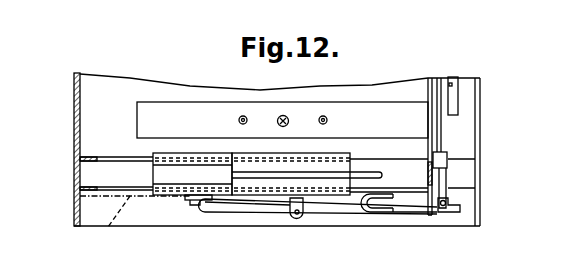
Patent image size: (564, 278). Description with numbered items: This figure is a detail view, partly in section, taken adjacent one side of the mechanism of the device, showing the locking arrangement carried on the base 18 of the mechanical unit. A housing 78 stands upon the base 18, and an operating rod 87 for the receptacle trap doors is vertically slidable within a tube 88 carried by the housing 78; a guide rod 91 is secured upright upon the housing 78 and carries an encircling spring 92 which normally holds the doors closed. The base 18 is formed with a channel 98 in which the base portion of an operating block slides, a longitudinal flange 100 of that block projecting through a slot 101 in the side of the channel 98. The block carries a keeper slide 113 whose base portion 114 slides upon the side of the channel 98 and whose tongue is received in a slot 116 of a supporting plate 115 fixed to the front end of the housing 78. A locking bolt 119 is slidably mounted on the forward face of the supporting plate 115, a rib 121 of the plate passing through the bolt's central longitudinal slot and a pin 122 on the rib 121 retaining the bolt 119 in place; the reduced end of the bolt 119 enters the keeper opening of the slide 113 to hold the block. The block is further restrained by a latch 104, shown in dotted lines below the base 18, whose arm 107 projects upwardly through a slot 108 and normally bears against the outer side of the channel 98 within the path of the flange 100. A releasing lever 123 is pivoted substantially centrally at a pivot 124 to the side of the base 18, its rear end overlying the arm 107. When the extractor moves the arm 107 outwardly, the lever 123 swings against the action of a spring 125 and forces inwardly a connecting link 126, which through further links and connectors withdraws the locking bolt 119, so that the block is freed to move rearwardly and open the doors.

The base 18 is at (74, 88).
The housing 78 is at (282, 120).
The spring 92 is at (242, 116).
The tube 88 is at (283, 115).
The guide rod 91 is at (322, 116).
The operating rod 87 is at (302, 124).
The slot 101 is at (100, 189).
The flange 100 is at (156, 157).
The keeper slide 113 is at (322, 172).
The base portion 114 is at (279, 165).
The supporting plate 115 is at (428, 90).
The slot 116 is at (427, 173).
The locking bolt 119 is at (442, 133).
The rib 121 is at (458, 100).
The pin 122 is at (452, 77).
The connecting link 126 is at (445, 180).
The channel 98 is at (463, 183).
The releasing lever 123 is at (420, 207).
The spring 125 is at (367, 217).
The pivot 124 is at (293, 220).
The arm 107 is at (188, 200).
The slot 108 is at (193, 201).
The latch 104 is at (102, 231).